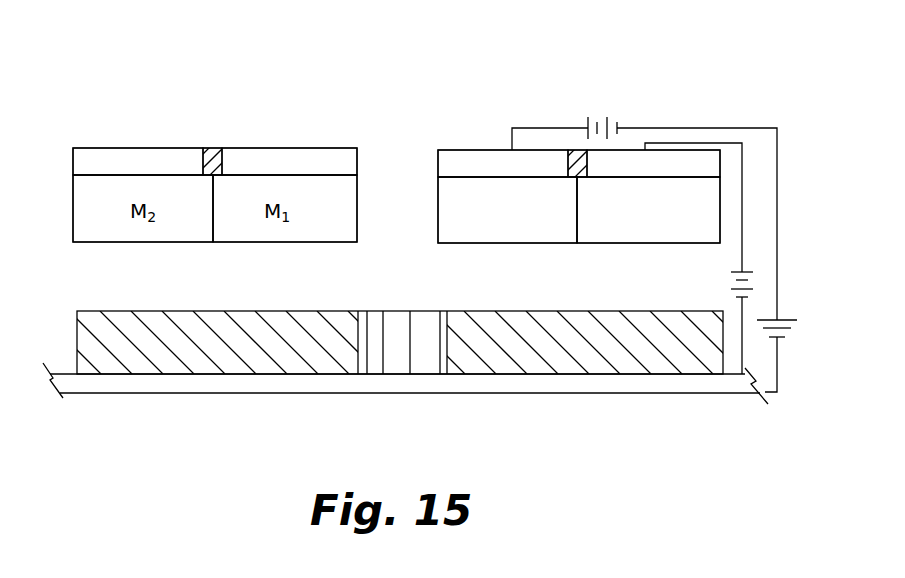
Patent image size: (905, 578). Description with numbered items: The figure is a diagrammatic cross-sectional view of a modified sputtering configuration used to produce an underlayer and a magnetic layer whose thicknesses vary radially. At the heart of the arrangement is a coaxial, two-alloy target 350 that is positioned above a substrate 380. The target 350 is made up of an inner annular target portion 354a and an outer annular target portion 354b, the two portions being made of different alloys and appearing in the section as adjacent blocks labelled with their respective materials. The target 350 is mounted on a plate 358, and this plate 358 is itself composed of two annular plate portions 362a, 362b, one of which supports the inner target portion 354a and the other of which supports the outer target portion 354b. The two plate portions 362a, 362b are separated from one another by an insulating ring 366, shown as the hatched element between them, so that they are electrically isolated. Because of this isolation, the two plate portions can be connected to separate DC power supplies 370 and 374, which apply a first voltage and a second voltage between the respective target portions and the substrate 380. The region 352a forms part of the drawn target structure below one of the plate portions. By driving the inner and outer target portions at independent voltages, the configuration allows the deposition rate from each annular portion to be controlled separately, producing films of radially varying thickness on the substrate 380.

The two-alloy target 350 is at (583, 253).
The first metal region M1 352a is at (522, 230).
The inner annular target portion 354a is at (257, 227).
The outer annular target portion 354b is at (105, 227).
The plate 358 is at (572, 118).
The annular plate portion 362a is at (305, 148).
The annular plate portion 362b is at (133, 165).
The insulating ring 366 is at (213, 148).
The DC power supply 370 is at (605, 117).
The DC power supply 374 is at (730, 285).
The substrate 380 is at (262, 356).